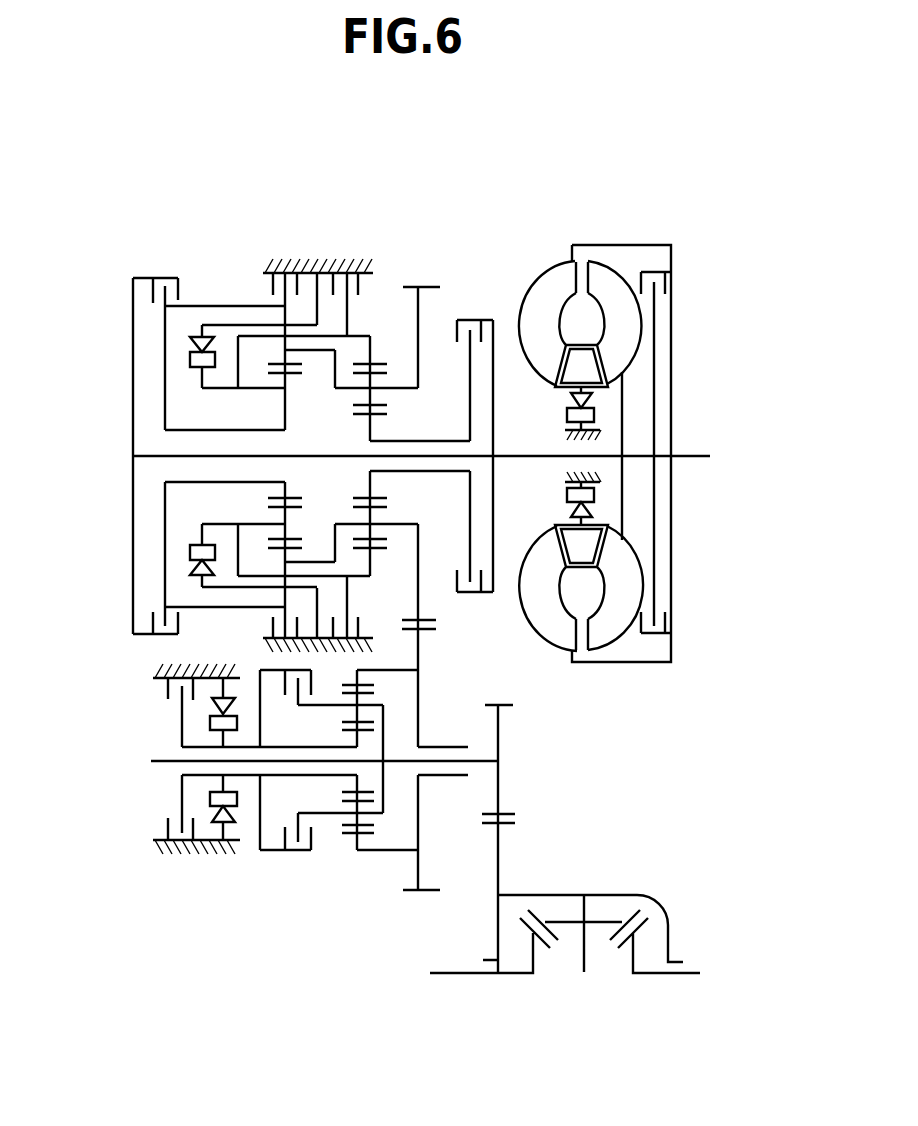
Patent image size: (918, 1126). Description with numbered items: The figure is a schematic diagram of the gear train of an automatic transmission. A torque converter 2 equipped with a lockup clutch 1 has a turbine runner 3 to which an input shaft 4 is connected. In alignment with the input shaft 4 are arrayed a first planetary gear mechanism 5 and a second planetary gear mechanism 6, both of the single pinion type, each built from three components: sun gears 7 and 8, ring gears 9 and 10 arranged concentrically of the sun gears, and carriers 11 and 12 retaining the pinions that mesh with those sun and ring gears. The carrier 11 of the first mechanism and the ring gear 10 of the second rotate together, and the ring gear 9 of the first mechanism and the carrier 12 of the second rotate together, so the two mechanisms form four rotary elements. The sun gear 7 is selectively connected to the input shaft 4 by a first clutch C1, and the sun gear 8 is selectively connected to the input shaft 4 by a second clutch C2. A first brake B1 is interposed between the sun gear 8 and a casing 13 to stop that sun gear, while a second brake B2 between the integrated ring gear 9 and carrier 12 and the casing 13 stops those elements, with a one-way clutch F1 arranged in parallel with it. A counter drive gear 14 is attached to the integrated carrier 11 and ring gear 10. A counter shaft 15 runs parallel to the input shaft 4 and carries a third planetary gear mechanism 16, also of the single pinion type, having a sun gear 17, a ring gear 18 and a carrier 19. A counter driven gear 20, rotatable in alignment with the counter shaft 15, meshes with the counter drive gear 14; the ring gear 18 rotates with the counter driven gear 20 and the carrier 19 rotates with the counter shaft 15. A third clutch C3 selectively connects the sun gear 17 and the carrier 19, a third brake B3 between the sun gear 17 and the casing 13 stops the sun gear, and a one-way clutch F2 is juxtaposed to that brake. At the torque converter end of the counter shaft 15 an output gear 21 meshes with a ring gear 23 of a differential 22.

The lockup clutch 1 is at (666, 283).
The torque converter 2 is at (583, 676).
The turbine runner 3 is at (607, 620).
The input shaft 4 is at (528, 456).
The first planetary gear mechanism 5 is at (388, 302).
The second planetary gear mechanism 6 is at (260, 349).
The sun gear 7 is at (378, 417).
The sun gear 8 is at (288, 498).
The ring gear 9 is at (374, 363).
The ring gear 10 is at (277, 551).
The carrier 11 is at (410, 388).
The carrier 12 is at (258, 521).
The casing 13 is at (318, 265).
The counter drive gear 14 is at (437, 622).
The counter shaft 15 is at (165, 760).
The third planetary gear mechanism 16 is at (334, 860).
The sun gear 17 is at (347, 729).
The ring gear 18 is at (349, 850).
The carrier 19 is at (378, 822).
The counter driven gear 20 is at (419, 653).
The output gear 21 is at (510, 813).
The differential 22 is at (606, 884).
The ring gear 23 is at (510, 825).
The first clutch C1 is at (473, 326).
The second clutch C2 is at (166, 278).
The third clutch C3 is at (297, 850).
The first brake B1 is at (272, 284).
The second brake B2 is at (358, 293).
The third brake B3 is at (168, 828).
The one-way clutch F1 is at (190, 359).
The one-way clutch F2 is at (236, 813).